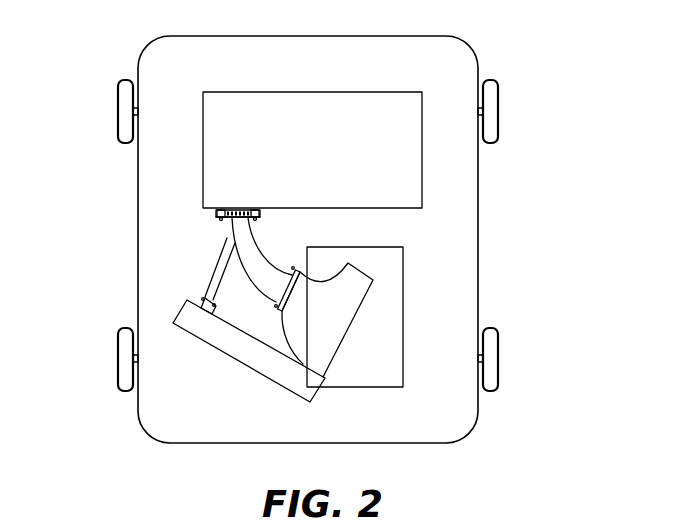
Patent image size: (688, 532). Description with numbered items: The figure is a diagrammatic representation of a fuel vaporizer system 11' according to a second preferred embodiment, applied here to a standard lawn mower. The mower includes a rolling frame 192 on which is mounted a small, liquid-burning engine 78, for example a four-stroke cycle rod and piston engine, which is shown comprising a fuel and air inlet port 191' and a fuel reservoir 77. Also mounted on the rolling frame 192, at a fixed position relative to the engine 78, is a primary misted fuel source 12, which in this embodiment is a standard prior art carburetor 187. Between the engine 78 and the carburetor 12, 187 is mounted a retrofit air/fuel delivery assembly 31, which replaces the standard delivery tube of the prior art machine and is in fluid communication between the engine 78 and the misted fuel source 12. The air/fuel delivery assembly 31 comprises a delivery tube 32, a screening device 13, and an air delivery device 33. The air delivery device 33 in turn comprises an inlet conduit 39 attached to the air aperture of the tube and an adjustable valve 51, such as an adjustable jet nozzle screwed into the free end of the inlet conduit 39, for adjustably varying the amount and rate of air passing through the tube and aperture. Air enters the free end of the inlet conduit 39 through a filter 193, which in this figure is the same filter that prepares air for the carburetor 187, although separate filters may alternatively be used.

The rolling frame 192 is at (405, 457).
The engine 78 is at (323, 157).
The fuel reservoir 77 is at (384, 357).
The fuel and air inlet port 191' is at (170, 192).
The screening device 13 is at (224, 230).
The delivery tube 32 is at (252, 243).
The air/fuel delivery assembly 31 is at (279, 249).
The fuel vaporizer system 11' is at (137, 236).
The inlet conduit 39 is at (227, 263).
The air delivery device 33 is at (204, 282).
The adjustable valve 51 is at (203, 303).
The primary misted fuel source 12 is at (427, 320).
The carburetor 187 is at (350, 288).
The filter 193 is at (234, 340).